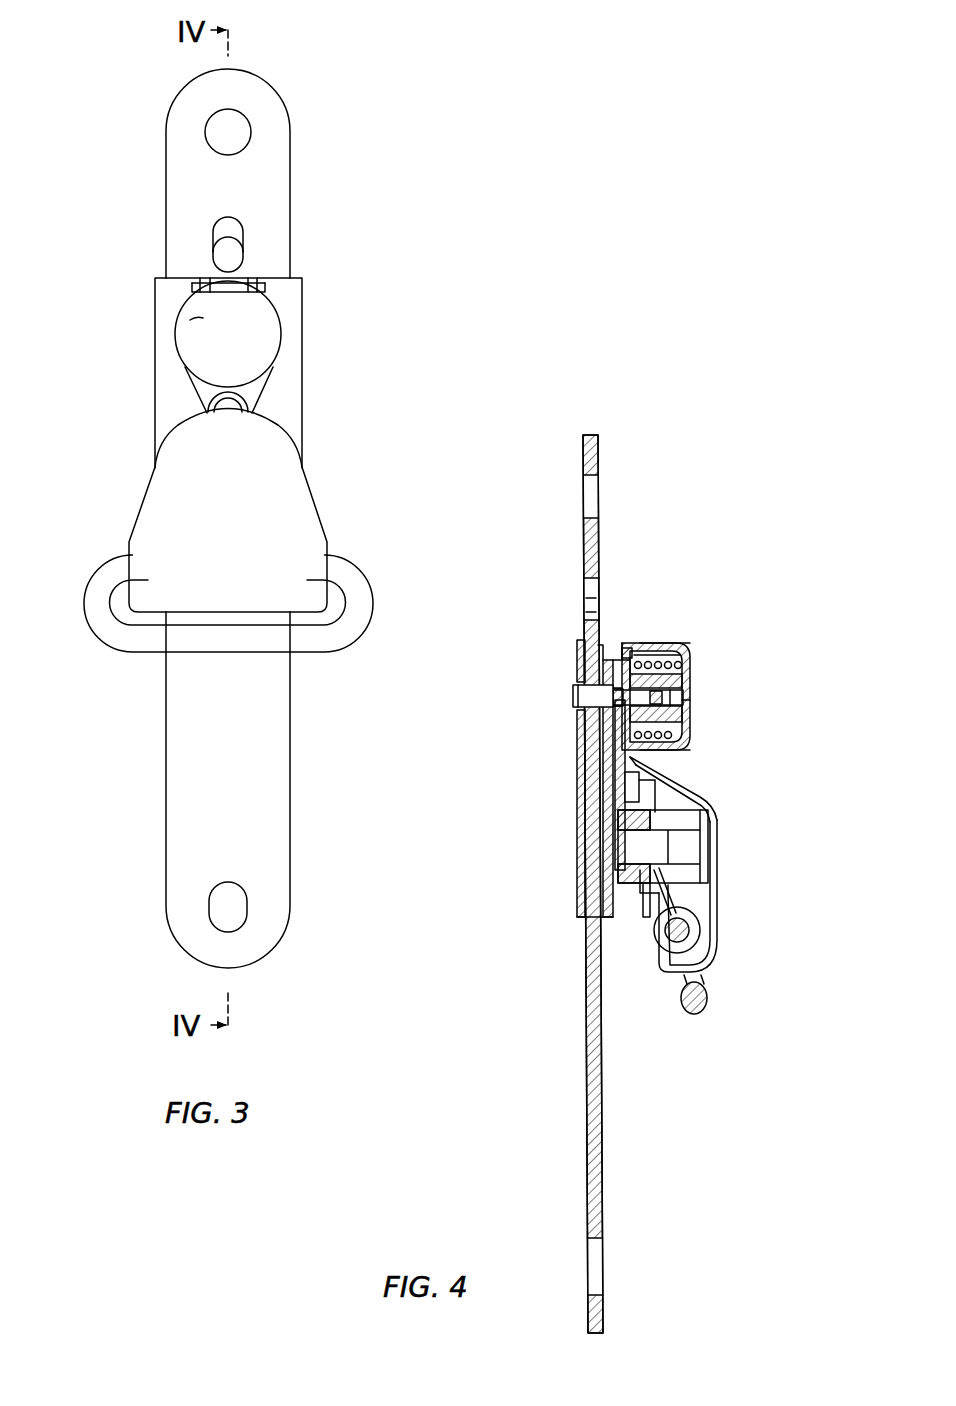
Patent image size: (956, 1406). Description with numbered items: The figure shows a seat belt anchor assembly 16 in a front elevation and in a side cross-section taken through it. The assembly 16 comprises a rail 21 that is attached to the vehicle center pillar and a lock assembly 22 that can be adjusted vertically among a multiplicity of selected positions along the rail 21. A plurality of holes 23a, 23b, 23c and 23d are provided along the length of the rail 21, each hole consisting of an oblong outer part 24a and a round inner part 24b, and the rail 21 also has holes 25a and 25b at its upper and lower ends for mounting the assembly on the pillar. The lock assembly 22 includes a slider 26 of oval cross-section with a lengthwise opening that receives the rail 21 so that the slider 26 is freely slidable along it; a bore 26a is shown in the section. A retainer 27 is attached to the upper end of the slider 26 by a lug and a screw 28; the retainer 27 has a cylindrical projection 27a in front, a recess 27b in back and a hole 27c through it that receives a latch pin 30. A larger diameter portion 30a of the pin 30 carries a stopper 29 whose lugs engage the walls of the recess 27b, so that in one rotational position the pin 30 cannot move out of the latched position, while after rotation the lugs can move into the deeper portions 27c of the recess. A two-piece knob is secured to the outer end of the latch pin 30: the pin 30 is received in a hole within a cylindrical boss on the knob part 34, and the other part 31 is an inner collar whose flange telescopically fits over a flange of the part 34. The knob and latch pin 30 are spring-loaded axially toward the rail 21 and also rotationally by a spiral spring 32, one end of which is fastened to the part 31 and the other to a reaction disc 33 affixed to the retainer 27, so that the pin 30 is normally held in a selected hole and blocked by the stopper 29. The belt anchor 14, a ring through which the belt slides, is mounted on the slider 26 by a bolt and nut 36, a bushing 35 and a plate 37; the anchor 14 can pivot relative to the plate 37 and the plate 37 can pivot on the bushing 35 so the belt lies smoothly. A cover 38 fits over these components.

In FIG. 3, the belt anchor 14 is at (128, 640).
In FIG. 4, the belt anchor 14 is at (704, 1004).
In FIG. 3, the anchor assembly 16 is at (173, 373).
In FIG. 4, the anchor assembly 16 is at (682, 743).
In FIG. 3, the rail 21 is at (178, 797).
In FIG. 4, the rail 21 is at (623, 880).
In FIG. 3, the lock assembly 22 is at (176, 371).
In FIG. 4, the lock assembly 22 is at (673, 743).
In FIG. 3, the hole 23a is at (124, 237).
In FIG. 4, the hole 23a is at (675, 566).
In FIG. 4, the hole 23b is at (580, 672).
In FIG. 4, the hole 23c is at (610, 780).
In FIG. 4, the hole 23d is at (582, 838).
In FIG. 3, the oblong outer part 24a is at (222, 228).
In FIG. 4, the oblong outer part 24a is at (598, 588).
In FIG. 3, the round inner part 24b is at (222, 256).
In FIG. 4, the round inner part 24b is at (594, 612).
In FIG. 3, the hole 25a is at (242, 127).
In FIG. 4, the hole 25a is at (598, 487).
In FIG. 3, the hole 25b is at (238, 905).
In FIG. 4, the hole 25b is at (597, 1265).
In FIG. 3, the slider 26 is at (287, 330).
In FIG. 4, the slider 26 is at (582, 719).
In FIG. 4, the knob bore 26a is at (613, 697).
In FIG. 3, the retainer 27 is at (255, 388).
In FIG. 4, the retainer 27 is at (668, 770).
In FIG. 4, the cylindrical projection 27a is at (668, 645).
In FIG. 4, the recess 27b is at (628, 648).
In FIG. 4, the hole 27c is at (690, 745).
In FIG. 3, the screw 28 is at (255, 405).
In FIG. 4, the screw 28 is at (712, 812).
In FIG. 4, the stopper 29 is at (620, 712).
In FIG. 4, the latch pin 30 is at (581, 680).
In FIG. 4, the larger diameter portion 30a is at (580, 692).
In FIG. 4, the knob part 31 is at (645, 648).
In FIG. 4, the spiral spring 32 is at (660, 745).
In FIG. 4, the reaction disc 33 is at (690, 663).
In FIG. 3, the knob part 34 is at (190, 322).
In FIG. 4, the knob part 34 is at (690, 703).
In FIG. 4, the bushing 35 is at (642, 890).
In FIG. 4, the bolt and nut 36 is at (693, 858).
In FIG. 4, the plate 37 is at (695, 940).
In FIG. 3, the cover 38 is at (150, 528).
In FIG. 4, the cover 38 is at (714, 905).